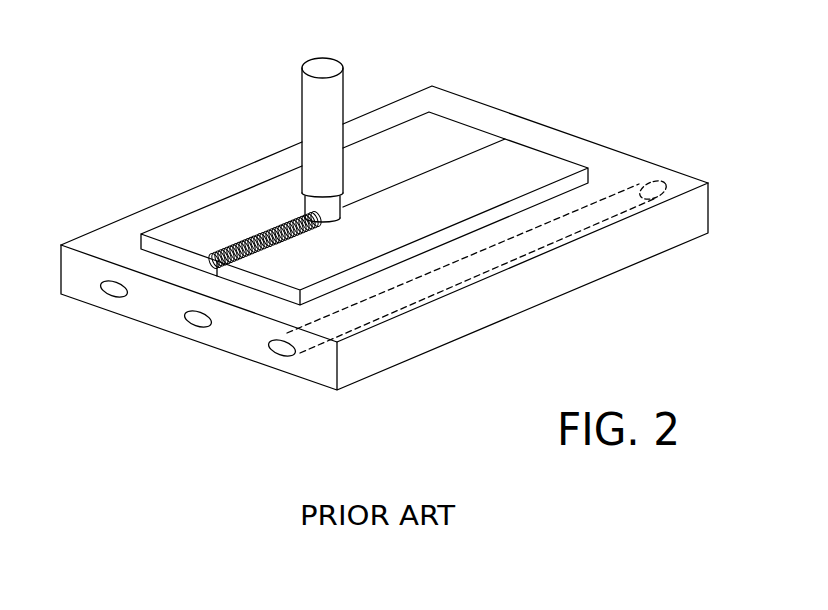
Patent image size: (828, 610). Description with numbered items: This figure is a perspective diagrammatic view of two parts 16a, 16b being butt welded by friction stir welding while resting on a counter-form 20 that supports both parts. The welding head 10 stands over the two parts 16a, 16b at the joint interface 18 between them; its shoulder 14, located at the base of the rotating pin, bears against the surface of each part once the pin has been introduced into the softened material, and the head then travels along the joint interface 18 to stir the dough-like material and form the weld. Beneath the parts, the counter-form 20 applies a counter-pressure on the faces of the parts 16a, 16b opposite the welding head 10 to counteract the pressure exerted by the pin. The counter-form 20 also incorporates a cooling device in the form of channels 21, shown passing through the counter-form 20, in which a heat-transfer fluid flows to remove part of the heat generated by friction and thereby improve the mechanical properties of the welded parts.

The welding head 10 is at (296, 108).
The shoulder 14 is at (336, 222).
The part 16a is at (283, 291).
The part 16b is at (150, 247).
The joint interface 18 is at (218, 272).
The counter-form 20 is at (330, 370).
The channels 21 is at (287, 352).